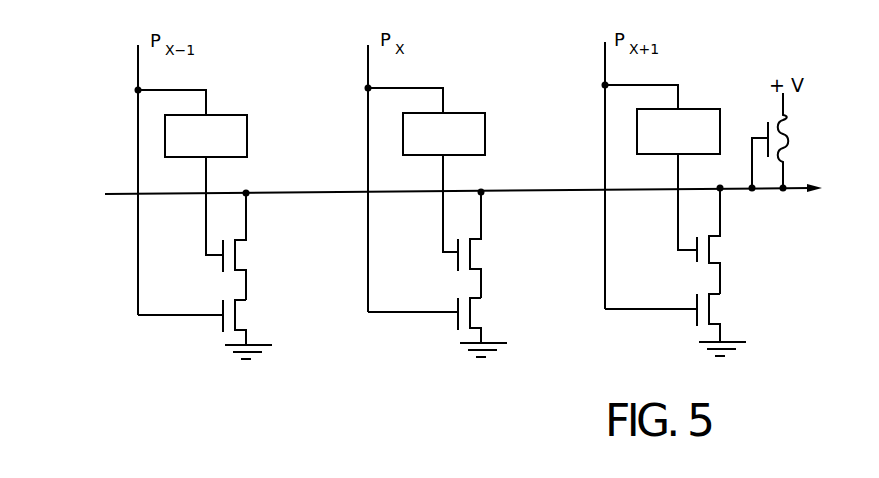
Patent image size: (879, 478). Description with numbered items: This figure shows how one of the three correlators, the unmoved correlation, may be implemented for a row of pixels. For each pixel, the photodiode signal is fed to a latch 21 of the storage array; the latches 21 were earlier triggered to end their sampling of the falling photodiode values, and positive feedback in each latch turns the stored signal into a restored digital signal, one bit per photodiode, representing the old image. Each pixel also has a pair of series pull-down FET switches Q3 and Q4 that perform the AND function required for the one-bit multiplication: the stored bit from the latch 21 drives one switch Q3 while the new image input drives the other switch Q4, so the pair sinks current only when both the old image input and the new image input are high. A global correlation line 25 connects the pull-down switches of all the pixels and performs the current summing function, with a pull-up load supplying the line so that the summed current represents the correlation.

The latches 21 is at (233, 115).
The global correlation line 25 is at (310, 192).
The pull-down FET switch Q3 is at (477, 227).
The pull-down FET switch Q4 is at (443, 326).